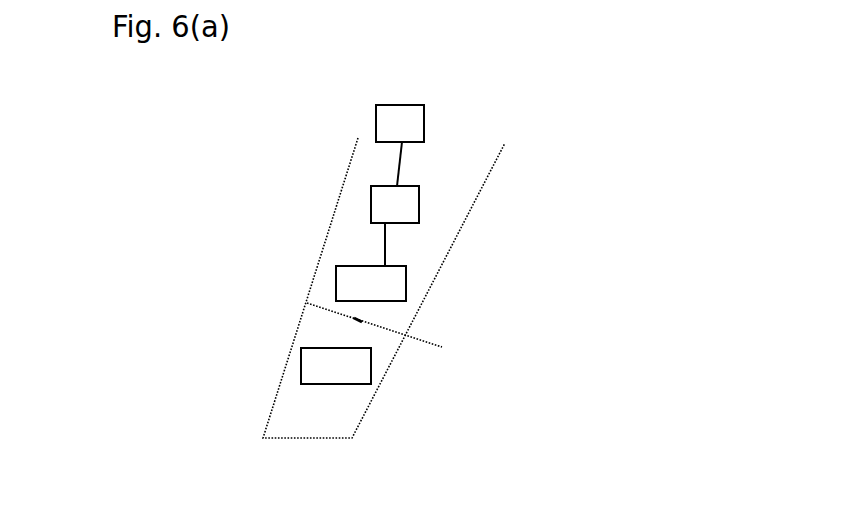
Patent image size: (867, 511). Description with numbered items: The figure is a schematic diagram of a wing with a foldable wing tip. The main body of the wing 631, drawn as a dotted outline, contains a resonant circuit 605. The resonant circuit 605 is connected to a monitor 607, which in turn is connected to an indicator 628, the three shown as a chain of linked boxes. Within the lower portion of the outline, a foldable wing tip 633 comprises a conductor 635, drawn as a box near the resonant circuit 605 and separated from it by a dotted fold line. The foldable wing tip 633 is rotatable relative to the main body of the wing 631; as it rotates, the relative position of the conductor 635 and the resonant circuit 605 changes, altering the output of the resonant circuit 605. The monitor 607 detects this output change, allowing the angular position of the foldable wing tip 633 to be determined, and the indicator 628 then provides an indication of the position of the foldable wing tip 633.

The resonant circuit 605 is at (336, 281).
The monitor 607 is at (371, 204).
The indicator 628 is at (424, 124).
The main body of the wing 631 is at (488, 173).
The foldable wing tip 633 is at (360, 406).
The conductor 635 is at (301, 369).